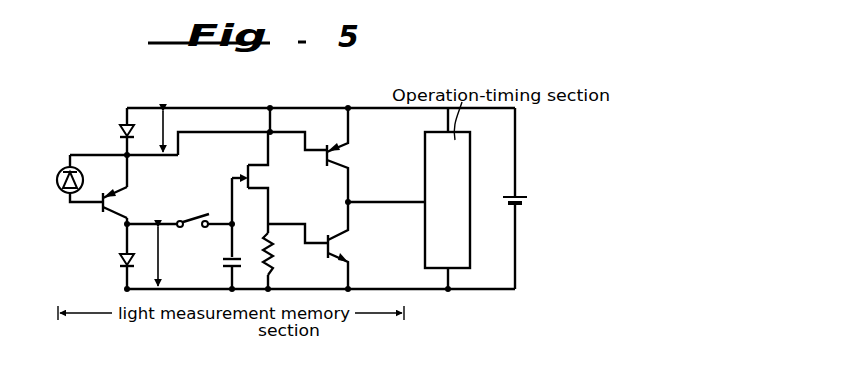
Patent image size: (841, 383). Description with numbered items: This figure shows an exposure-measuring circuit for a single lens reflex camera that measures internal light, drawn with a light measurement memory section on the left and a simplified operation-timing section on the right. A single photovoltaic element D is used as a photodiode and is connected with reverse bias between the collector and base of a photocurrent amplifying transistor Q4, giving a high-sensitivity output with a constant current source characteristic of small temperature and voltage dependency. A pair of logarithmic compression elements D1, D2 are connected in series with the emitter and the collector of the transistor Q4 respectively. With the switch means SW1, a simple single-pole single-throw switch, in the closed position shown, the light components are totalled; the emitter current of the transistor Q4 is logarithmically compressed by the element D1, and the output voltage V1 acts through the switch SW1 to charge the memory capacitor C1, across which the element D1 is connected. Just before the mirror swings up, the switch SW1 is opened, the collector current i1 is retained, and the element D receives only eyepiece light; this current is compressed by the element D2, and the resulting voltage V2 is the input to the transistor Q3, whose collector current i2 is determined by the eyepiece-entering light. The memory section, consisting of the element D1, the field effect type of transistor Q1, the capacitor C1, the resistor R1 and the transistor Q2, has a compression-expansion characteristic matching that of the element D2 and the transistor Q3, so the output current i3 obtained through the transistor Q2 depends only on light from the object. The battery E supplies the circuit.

The photovoltaic element D is at (61, 190).
The logarithmic compression element D1 is at (114, 256).
The logarithmic compression element D2 is at (120, 131).
The output voltage V1 is at (155, 257).
The resulting voltage V2 is at (161, 139).
The field effect type of transistor Q1 is at (254, 177).
The transistor Q2 is at (355, 249).
The transistor Q3 is at (350, 156).
The photocurrent amplifying transistor Q4 is at (126, 202).
The switch means SW1 is at (193, 211).
The memory capacitor C1 is at (219, 251).
The resistor R1 is at (282, 254).
The collector current i1 is at (348, 214).
The collector current i2 is at (348, 176).
The output current i3 is at (404, 202).
The battery (power source) E is at (526, 204).